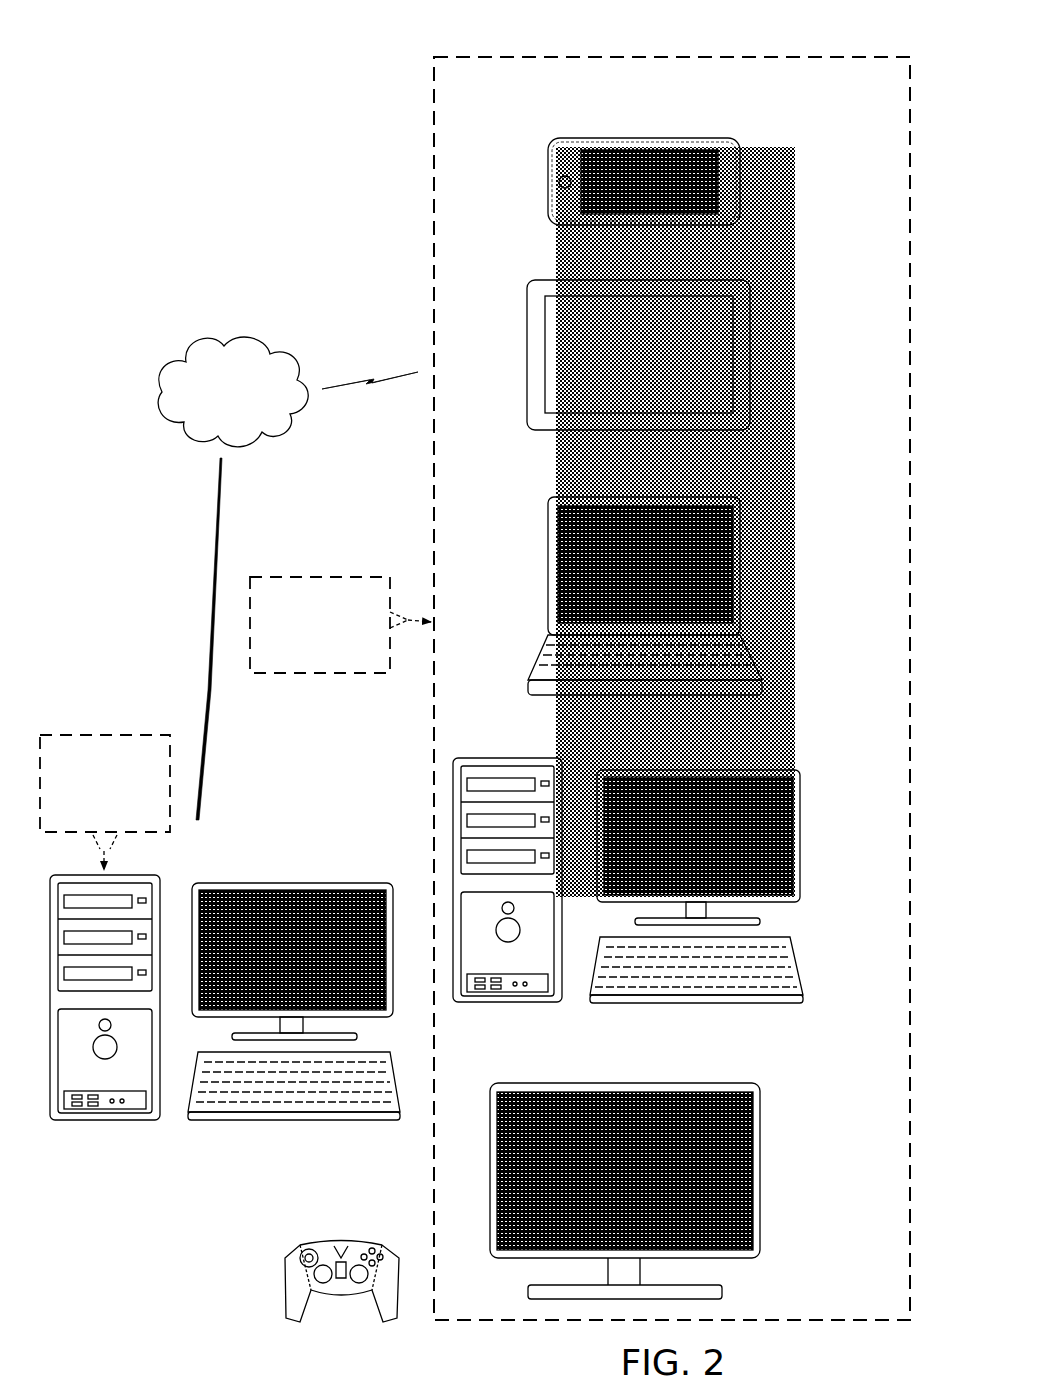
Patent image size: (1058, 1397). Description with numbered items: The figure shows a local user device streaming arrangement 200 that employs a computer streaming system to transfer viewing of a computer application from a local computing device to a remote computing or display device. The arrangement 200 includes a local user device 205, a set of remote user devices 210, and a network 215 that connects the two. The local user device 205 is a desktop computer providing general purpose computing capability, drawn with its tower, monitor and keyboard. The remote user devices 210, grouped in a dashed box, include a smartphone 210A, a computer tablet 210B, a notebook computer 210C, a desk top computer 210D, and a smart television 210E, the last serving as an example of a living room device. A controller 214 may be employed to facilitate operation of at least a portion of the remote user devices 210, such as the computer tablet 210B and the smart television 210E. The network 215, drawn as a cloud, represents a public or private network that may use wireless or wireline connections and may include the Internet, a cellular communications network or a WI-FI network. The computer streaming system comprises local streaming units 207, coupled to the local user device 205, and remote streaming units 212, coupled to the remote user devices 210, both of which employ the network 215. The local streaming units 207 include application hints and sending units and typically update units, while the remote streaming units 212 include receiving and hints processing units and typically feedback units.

The local user device streaming arrangement 200 is at (201, 96).
The local user device 205 is at (295, 1122).
The local streaming units 207 is at (93, 734).
The remote user devices 210 is at (750, 52).
The smartphone 210A is at (745, 183).
The computer tablet 210B is at (752, 357).
The notebook computer 210C is at (745, 560).
The desk top computer 210D is at (803, 830).
The smart television 210E is at (762, 1170).
The remote streaming units 212 is at (311, 576).
The controller 214 is at (283, 1297).
The network 215 is at (198, 336).